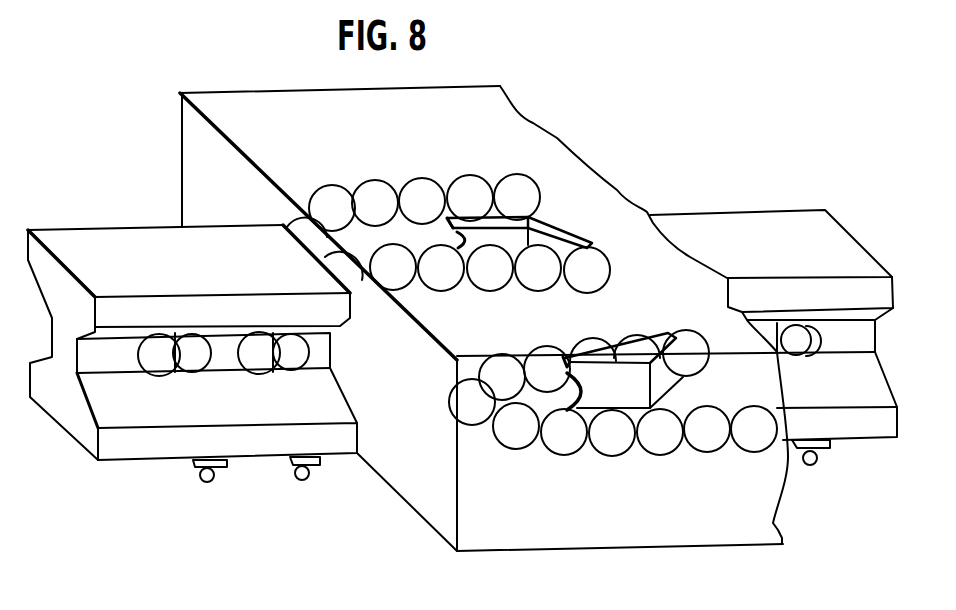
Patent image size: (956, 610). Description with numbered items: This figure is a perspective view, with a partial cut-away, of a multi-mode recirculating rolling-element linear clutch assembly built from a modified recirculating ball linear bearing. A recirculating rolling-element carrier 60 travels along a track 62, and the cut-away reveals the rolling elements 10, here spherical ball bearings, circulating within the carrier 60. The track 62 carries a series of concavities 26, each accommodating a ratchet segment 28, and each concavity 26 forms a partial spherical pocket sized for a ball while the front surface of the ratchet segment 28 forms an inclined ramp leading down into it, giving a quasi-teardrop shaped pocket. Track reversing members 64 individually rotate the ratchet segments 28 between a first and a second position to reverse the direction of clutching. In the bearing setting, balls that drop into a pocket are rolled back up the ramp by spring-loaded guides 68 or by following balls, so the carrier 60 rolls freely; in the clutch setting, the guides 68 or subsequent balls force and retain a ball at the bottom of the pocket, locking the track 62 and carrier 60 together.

The rolling elements 10 is at (577, 447).
The concavities 26 is at (305, 338).
The ratchet segments 28 is at (352, 475).
The recirculating rolling-element carrier 60 is at (748, 517).
The track 62 is at (160, 457).
The track reversing members 64 is at (293, 473).
The spring-loaded guides 68 is at (660, 333).